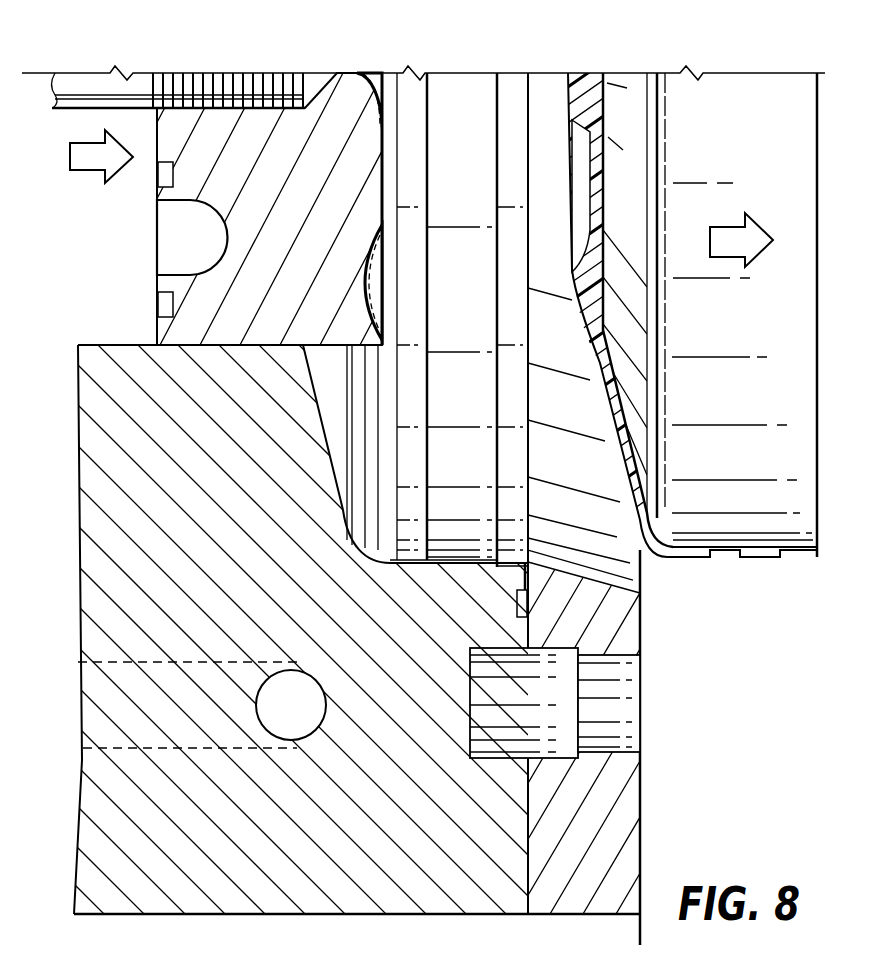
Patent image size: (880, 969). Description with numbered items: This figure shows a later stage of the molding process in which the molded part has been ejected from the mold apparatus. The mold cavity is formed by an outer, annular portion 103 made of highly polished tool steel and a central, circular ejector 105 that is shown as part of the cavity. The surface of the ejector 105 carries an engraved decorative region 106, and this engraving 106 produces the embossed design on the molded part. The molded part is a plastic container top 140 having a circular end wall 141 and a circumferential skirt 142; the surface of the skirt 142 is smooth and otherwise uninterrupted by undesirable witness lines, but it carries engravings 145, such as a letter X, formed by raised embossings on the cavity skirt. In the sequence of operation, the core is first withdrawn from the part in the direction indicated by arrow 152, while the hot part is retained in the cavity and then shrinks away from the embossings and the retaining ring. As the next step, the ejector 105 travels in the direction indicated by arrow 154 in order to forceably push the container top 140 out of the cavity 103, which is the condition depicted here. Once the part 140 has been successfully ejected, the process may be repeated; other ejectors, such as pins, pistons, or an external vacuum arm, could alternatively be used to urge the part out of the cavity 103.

The outer annular portion 103 is at (77, 437).
The ejector 105 is at (173, 332).
The engraved decorative region 106 is at (585, 82).
The molded plastic container top 140 is at (755, 93).
The circular end wall 141 is at (625, 82).
The circumferential skirt 142 is at (803, 452).
The engravings 145 is at (737, 557).
The arrow 152 is at (763, 233).
The arrow 154 is at (92, 165).